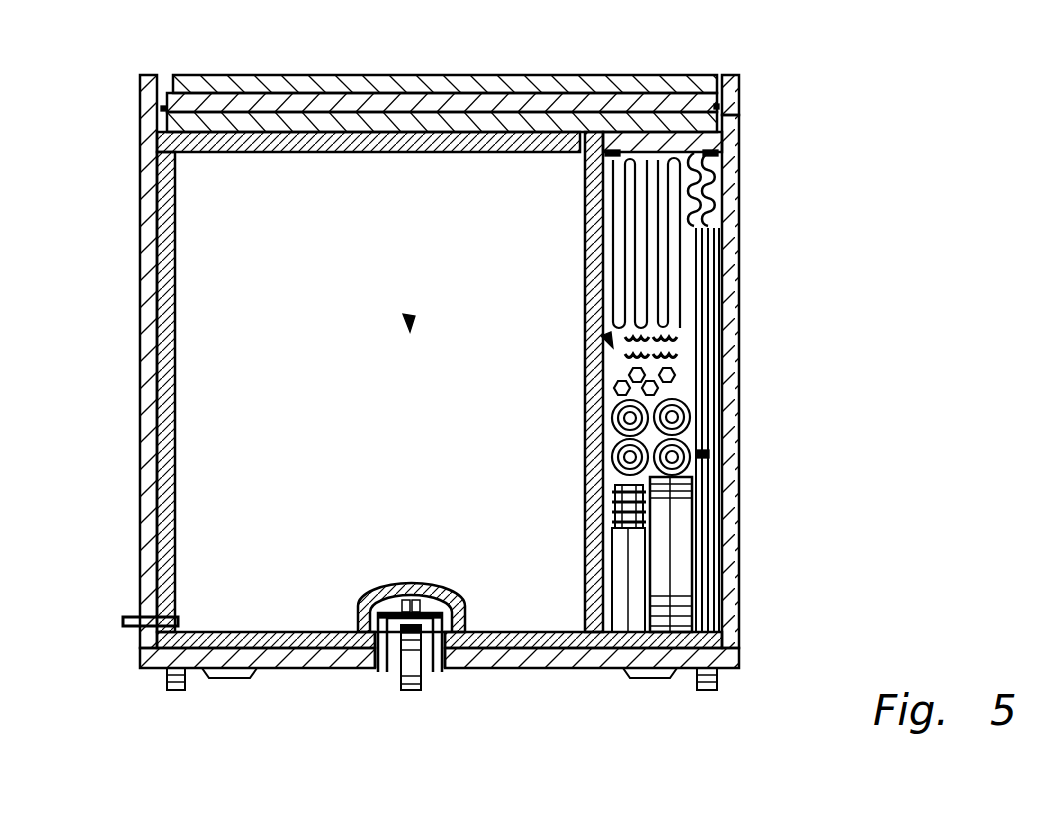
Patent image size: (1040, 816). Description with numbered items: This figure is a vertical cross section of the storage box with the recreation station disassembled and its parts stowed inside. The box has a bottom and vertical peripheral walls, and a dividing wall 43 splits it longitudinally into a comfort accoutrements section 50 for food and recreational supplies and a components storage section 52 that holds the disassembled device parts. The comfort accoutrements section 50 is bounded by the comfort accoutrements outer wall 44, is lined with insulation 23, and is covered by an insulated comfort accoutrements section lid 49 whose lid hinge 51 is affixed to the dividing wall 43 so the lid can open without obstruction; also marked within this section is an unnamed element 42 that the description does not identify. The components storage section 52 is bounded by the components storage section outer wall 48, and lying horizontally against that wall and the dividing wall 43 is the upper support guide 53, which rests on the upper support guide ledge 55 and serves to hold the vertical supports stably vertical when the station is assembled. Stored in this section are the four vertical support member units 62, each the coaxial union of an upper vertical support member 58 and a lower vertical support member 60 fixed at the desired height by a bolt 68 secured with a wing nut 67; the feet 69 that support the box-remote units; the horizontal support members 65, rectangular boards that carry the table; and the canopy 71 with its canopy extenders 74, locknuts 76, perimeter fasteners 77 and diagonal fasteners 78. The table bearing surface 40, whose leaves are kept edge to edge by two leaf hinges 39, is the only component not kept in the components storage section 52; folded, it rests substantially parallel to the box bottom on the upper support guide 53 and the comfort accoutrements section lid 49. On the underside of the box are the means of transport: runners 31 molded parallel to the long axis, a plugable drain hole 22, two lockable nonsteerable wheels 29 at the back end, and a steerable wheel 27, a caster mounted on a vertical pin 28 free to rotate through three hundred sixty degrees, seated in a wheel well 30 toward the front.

The plugable drain hole 22 is at (135, 618).
The insulation 23 is at (162, 303).
The steerable wheel 27 is at (416, 690).
The vertical pin 28 is at (392, 588).
The nonsteerable wheels 29 is at (178, 690).
The wheel well 30 is at (388, 640).
The runners 31 is at (245, 678).
The leaf hinges 39 is at (163, 108).
The table bearing surface 40 is at (613, 348).
The cooling chamber 42 is at (410, 330).
The dividing wall 43 is at (585, 207).
The comfort accoutrements outer wall 44 is at (150, 352).
The components storage section outer wall 48 is at (722, 540).
The comfort accoutrements section lid 49 is at (240, 152).
The comfort accoutrements section 50 is at (333, 172).
The lid hinge 51 is at (582, 138).
The components storage section 52 is at (683, 333).
The upper support guide 53 is at (733, 118).
The upper support guide ledge 55 is at (722, 153).
The upper vertical support member 58 is at (690, 418).
The lower vertical support member 60 is at (695, 432).
The vertical support member units 62 is at (705, 457).
The horizontal support member 65 is at (640, 612).
The wing nut 67 is at (672, 352).
The bolt 68 is at (676, 378).
The feet 69 is at (668, 605).
The canopy 71 is at (650, 160).
The canopy extender 74 is at (720, 580).
The locknut 76 is at (612, 515).
The perimeter fasteners 77 is at (718, 207).
The diagonal fasteners 78 is at (738, 203).